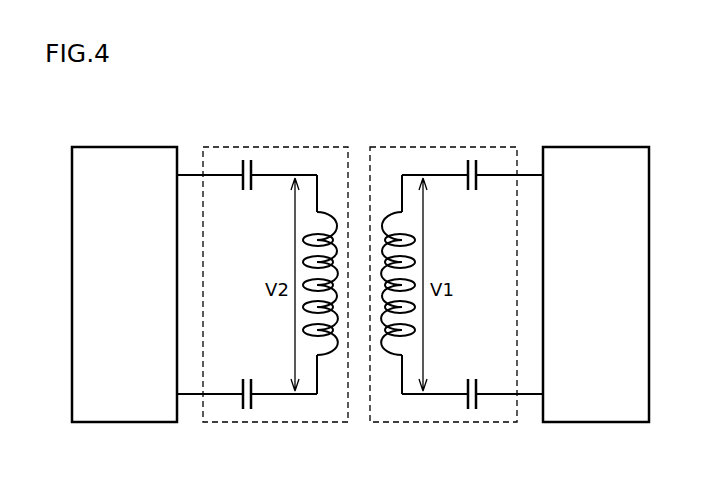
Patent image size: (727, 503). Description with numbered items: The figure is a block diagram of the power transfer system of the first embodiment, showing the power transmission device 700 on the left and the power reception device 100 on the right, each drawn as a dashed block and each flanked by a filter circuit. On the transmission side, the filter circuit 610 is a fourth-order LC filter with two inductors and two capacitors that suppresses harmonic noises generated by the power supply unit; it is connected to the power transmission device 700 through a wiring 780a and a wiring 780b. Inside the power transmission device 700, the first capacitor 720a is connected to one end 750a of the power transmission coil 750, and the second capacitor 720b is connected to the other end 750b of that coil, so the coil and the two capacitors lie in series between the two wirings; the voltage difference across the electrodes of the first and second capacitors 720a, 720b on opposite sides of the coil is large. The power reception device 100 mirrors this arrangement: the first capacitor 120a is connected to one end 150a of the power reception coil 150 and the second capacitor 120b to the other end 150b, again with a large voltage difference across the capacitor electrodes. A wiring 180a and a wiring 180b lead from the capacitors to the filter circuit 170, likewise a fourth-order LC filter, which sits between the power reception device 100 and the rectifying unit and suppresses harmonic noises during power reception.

The filter circuit 610 is at (146, 147).
The filter circuit 170 is at (620, 147).
The power transmission device 700 is at (292, 146).
The power reception device 100 is at (435, 146).
The wiring 780a is at (211, 173).
The wiring 780b is at (187, 396).
The first capacitor 720a is at (246, 146).
The second capacitor 720b is at (245, 424).
The power transmission coil 750 is at (337, 215).
The one end of power transmission coil 750a is at (319, 190).
The other end of power transmission coil 750b is at (319, 384).
The power reception coil 150 is at (382, 220).
The one end of power reception coil 150a is at (401, 190).
The other end of power reception coil 150b is at (402, 384).
The first capacitor 120a is at (482, 150).
The second capacitor 120b is at (484, 420).
The wiring 180a is at (527, 173).
The wiring 180b is at (528, 397).